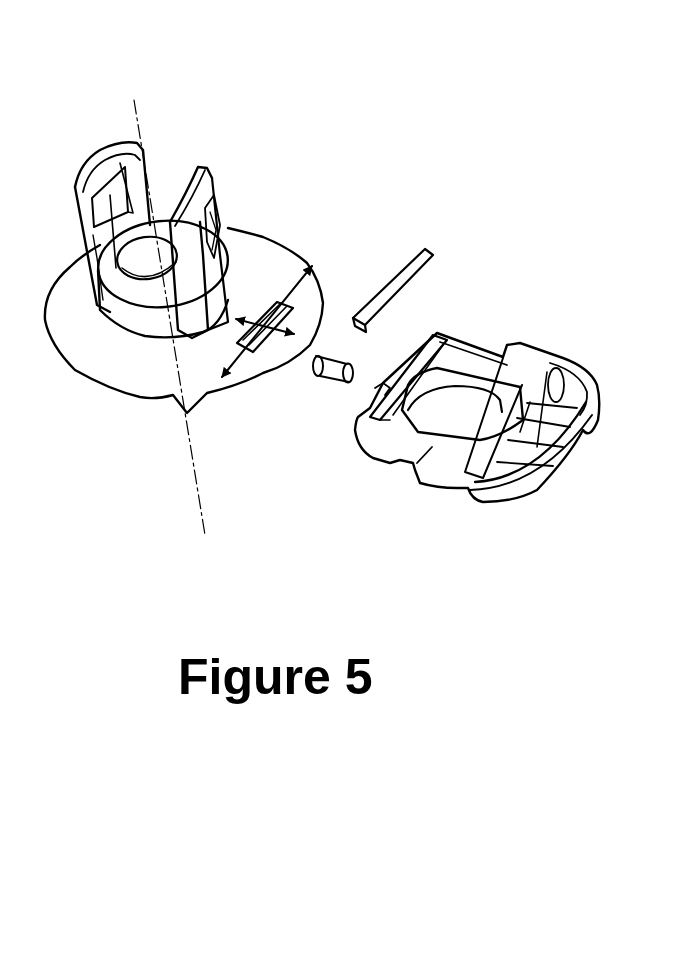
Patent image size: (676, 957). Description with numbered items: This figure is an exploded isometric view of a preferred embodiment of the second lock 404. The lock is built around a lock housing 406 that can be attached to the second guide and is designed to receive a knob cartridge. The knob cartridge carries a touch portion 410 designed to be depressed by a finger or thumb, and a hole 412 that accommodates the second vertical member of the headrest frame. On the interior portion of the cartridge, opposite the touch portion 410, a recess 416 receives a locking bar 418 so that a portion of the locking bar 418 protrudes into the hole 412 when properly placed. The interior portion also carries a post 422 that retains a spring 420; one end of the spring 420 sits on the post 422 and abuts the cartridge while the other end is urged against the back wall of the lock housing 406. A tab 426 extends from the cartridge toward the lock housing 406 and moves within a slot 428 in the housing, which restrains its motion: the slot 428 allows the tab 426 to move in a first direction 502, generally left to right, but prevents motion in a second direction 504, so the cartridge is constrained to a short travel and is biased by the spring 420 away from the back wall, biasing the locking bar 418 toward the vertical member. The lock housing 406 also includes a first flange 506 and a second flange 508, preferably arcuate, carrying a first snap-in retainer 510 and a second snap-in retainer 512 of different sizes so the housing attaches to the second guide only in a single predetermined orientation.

The second lock 404 is at (308, 117).
The lock housing 406 is at (97, 363).
The touch portion 410 is at (467, 391).
The hole 412 is at (470, 410).
The recess 416 is at (442, 332).
The locking bar 418 is at (415, 258).
The spring 420 is at (330, 350).
The post 422 is at (377, 392).
The tab 426 is at (593, 407).
The slot 428 is at (281, 320).
The first direction 502 is at (279, 355).
The second direction 504 is at (233, 352).
The first flange 506 is at (202, 167).
The second flange 508 is at (141, 212).
The first snap-in retainer 510 is at (217, 222).
The second snap-in retainer 512 is at (105, 200).